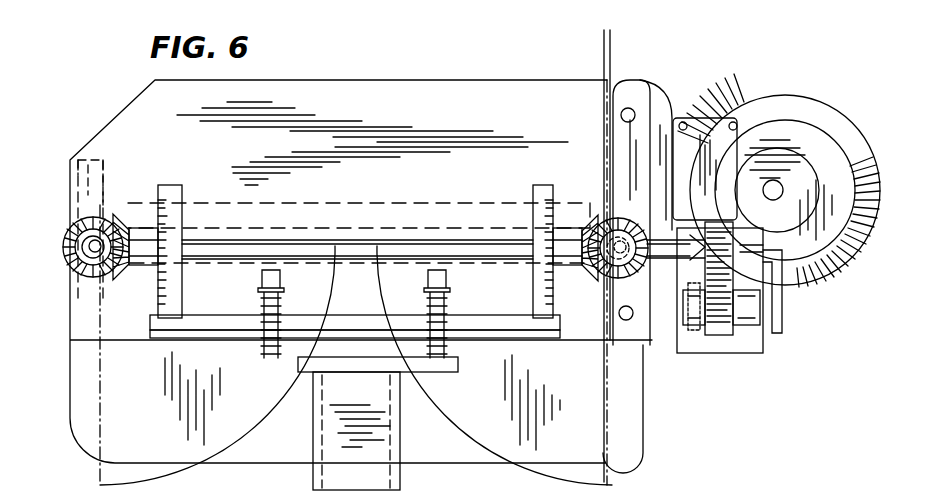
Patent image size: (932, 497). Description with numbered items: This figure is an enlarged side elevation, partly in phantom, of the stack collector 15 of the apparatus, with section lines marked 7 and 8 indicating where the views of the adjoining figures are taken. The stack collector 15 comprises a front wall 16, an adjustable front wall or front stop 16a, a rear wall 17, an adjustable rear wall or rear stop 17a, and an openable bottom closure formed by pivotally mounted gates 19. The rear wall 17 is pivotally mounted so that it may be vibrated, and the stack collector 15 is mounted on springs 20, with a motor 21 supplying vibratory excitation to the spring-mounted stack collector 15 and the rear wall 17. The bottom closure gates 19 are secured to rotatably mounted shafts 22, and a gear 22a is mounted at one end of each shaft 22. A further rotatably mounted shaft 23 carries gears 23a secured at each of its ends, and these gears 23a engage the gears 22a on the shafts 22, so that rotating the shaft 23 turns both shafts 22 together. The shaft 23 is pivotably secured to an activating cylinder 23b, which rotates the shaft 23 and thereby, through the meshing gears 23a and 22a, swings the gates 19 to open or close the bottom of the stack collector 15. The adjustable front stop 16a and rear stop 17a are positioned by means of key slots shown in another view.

The section line 7- 7 is at (800, 62).
The section line 8- 8 is at (66, 71).
The stack collector 15 is at (438, 92).
The front wall 16 is at (70, 308).
The adjustable front wall or front stop 16a is at (104, 172).
The rear wall 17 is at (660, 108).
The adjustable rear wall or rear stop 17a is at (604, 125).
The gates 19 is at (238, 232).
The springs 20 is at (262, 345).
The motor 21 is at (876, 209).
The shafts 22 is at (80, 250).
The gears 22a is at (70, 225).
The shaft 23 is at (415, 250).
The gears 23a is at (122, 268).
The activating cylinder 23b is at (768, 307).